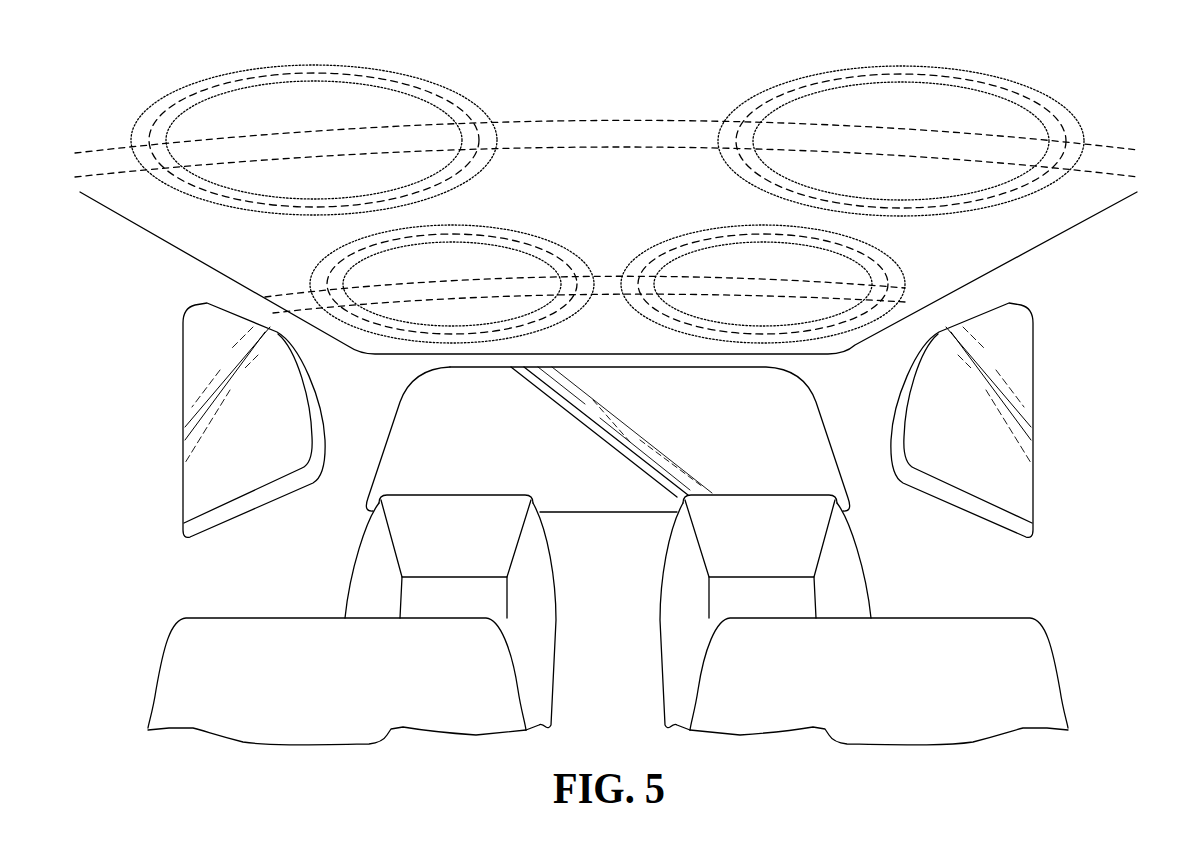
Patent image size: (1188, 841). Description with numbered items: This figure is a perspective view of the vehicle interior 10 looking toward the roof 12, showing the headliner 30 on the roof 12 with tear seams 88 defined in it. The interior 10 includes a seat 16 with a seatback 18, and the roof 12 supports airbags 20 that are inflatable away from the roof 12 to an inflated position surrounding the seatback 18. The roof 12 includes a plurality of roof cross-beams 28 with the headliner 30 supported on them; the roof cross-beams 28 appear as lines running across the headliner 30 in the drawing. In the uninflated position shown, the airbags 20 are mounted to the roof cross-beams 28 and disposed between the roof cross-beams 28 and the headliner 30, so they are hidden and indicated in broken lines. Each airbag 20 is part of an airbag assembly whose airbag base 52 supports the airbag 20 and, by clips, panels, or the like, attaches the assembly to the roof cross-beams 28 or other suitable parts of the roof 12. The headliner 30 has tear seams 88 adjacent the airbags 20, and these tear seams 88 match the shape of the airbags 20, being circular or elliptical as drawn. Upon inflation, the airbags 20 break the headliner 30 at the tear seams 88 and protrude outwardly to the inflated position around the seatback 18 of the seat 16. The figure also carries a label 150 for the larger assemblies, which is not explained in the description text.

The vehicle interior 10 is at (142, 292).
The roof 12 is at (1053, 242).
The seat 16 is at (553, 552).
The seatback 18 is at (352, 558).
The airbag 20 is at (705, 167).
The roof cross-beams 28 is at (1106, 148).
The headliner 30 is at (622, 91).
The airbag base 52 is at (305, 272).
The tear seams 88 is at (443, 92).
The large lighting assembly 150 is at (172, 78).